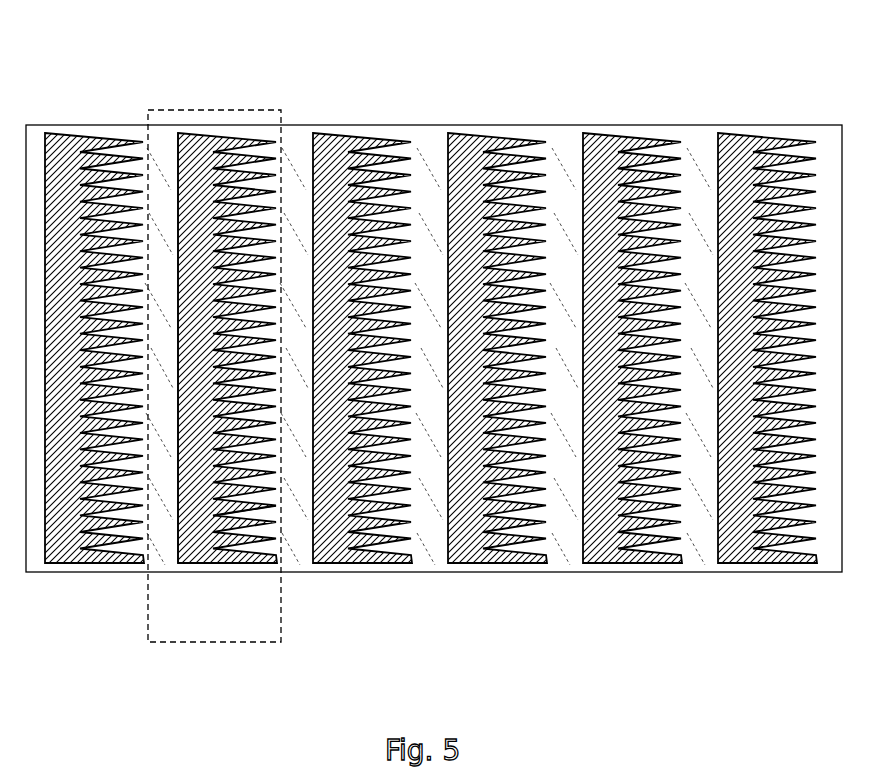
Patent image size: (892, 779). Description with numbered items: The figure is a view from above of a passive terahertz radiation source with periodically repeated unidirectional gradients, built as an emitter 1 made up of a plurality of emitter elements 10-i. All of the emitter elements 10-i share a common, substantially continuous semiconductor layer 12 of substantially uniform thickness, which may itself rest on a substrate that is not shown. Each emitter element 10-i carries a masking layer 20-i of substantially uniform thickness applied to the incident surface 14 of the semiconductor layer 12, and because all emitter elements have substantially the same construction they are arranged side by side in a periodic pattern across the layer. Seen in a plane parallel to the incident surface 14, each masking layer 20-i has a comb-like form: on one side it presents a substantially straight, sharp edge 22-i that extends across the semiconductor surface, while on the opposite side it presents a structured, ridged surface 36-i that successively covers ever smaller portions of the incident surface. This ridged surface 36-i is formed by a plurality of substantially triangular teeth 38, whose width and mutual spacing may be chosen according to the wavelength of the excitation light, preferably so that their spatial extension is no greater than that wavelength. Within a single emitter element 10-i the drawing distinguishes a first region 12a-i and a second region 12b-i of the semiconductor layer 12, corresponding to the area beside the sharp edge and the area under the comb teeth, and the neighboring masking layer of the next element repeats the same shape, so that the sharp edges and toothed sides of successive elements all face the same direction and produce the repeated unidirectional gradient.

The emitter 1 is at (434, 354).
The semiconductor layer 12 is at (560, 573).
The emitter element 10-i is at (205, 642).
The masking layer 20-i is at (193, 540).
The sharp edge 22-i is at (177, 184).
The ridged surface 36-i is at (278, 507).
The triangular teeth 38 is at (248, 565).
The first region of unit 12a-i is at (178, 105).
The second region of unit 12b-i is at (183, 110).
The incident surface 14 is at (435, 168).